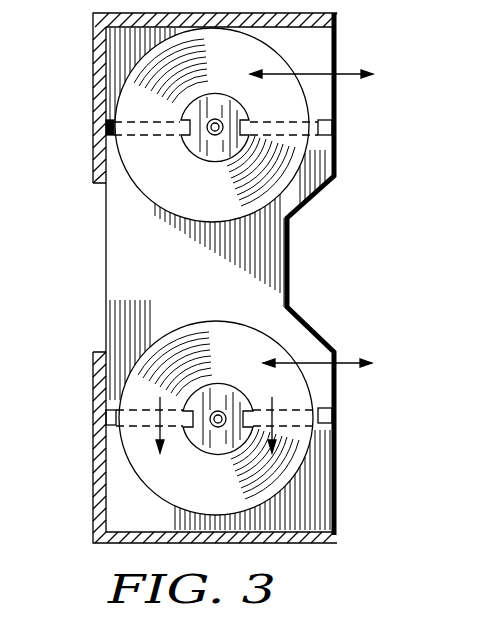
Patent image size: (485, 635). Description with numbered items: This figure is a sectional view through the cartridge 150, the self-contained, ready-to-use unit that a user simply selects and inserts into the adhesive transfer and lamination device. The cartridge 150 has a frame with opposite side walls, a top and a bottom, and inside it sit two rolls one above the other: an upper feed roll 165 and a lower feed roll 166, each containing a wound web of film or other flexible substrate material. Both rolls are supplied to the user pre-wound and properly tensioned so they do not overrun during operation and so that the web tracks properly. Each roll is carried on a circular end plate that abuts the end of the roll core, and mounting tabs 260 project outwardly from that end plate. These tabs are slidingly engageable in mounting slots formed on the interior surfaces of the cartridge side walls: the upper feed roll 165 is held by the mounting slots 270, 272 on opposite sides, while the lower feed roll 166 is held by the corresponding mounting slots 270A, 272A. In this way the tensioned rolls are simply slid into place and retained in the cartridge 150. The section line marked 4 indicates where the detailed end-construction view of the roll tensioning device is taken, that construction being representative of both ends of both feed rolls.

The cartridge 150 is at (88, 91).
The upper feed roll 165 is at (236, 64).
The lower feed roll 166 is at (247, 359).
The mounting tab 260 is at (250, 128).
The mounting slot 270 is at (326, 126).
The mounting slot 272 is at (182, 134).
The mounting slot 272A is at (106, 413).
The mounting slot 270A is at (333, 418).
The section line 4-4 arrows 4 is at (215, 415).